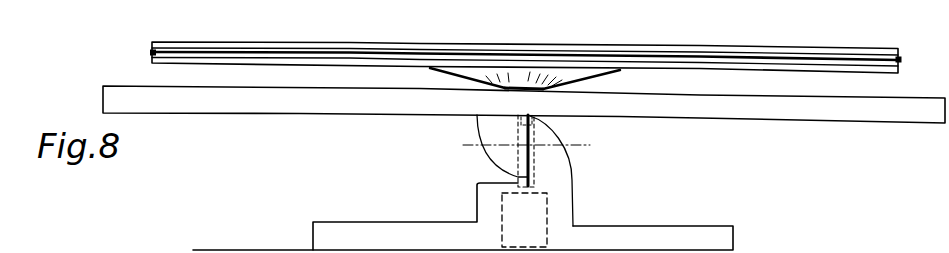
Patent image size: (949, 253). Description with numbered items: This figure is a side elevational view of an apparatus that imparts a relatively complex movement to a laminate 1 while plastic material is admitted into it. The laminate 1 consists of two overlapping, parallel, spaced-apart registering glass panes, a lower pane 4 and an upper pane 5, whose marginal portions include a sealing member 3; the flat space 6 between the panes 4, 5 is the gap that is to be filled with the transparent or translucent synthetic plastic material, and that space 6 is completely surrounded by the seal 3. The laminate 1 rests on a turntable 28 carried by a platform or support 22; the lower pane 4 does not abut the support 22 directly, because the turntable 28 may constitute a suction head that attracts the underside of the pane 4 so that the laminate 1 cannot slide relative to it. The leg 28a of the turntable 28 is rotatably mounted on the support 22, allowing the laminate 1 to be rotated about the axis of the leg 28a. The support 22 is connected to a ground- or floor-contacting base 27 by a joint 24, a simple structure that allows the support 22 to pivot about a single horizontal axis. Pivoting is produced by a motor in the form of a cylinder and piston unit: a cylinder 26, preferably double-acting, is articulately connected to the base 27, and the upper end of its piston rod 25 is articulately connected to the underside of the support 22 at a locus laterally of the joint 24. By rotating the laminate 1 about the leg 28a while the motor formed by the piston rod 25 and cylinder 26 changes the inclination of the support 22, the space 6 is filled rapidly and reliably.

The laminated structure 1 is at (813, 40).
The sealing member 3 is at (151, 52).
The lower glass pane 4 is at (262, 61).
The upper glass pane 5 is at (261, 47).
The space 6 is at (176, 53).
The support 22 is at (351, 104).
The joint 24 is at (484, 156).
The piston rod 25 is at (530, 187).
The cylinder 26 is at (535, 229).
The base 27 is at (654, 235).
The turntable 28 is at (557, 72).
The leg 28a is at (545, 88).